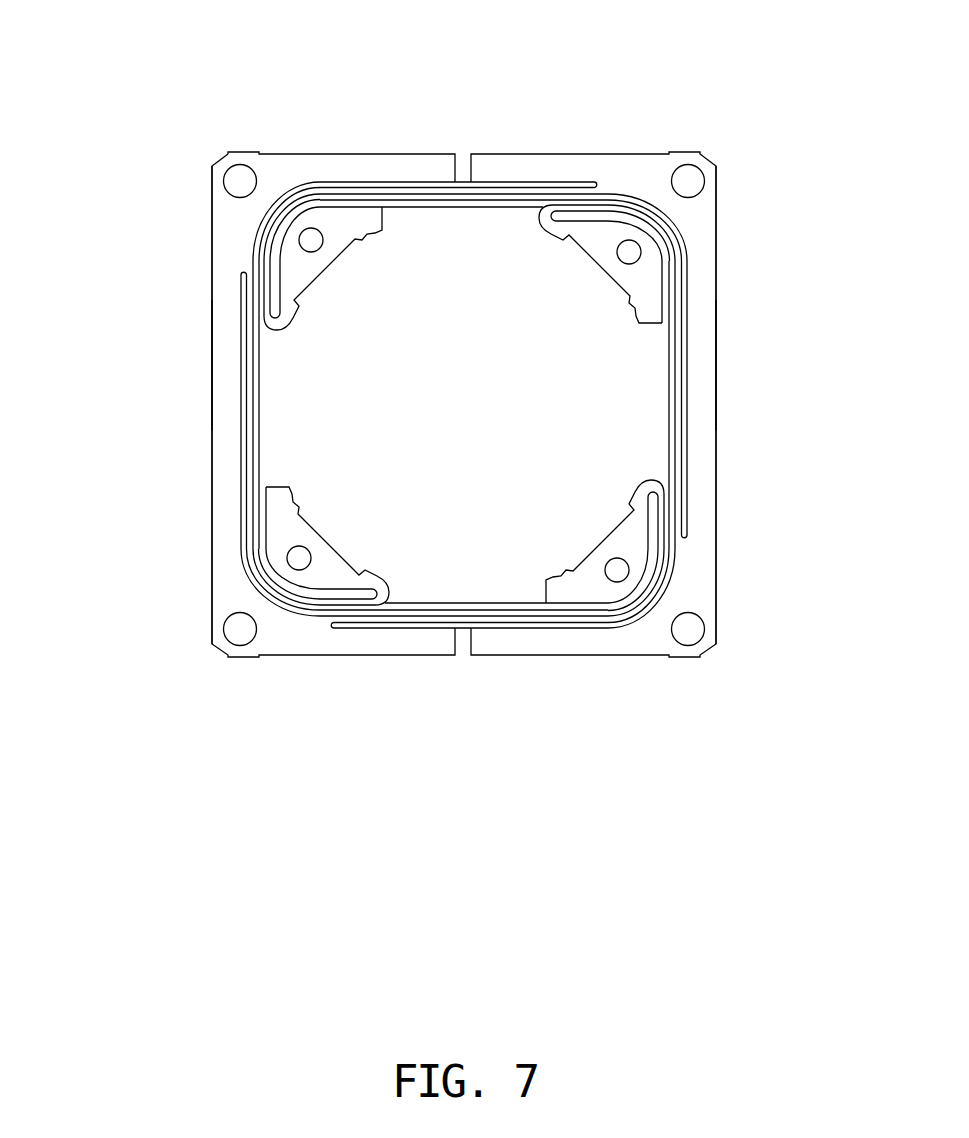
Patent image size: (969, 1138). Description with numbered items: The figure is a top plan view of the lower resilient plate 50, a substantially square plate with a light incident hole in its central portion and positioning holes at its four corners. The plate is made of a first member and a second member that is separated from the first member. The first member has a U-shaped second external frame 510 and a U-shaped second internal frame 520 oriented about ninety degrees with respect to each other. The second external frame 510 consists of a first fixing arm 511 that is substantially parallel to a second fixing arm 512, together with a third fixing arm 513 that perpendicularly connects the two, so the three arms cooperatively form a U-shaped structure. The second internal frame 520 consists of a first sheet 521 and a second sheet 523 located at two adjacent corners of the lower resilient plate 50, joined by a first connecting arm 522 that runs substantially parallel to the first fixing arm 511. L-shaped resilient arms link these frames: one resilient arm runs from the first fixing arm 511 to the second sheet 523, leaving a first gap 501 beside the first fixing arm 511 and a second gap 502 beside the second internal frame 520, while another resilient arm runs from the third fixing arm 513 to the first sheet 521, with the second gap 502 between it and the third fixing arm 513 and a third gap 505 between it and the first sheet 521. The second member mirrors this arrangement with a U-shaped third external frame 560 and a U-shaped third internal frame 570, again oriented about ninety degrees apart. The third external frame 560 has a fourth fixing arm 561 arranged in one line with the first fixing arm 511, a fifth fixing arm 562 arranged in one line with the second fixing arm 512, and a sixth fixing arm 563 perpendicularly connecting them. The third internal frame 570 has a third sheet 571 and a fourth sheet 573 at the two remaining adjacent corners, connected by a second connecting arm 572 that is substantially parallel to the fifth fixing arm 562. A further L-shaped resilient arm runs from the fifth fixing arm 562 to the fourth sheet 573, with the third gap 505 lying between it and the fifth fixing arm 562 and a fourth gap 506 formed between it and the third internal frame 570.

The lower resilient plate 50 is at (193, 66).
The first gap 501 is at (323, 185).
The second gap 502 is at (685, 333).
The third gap 505 is at (618, 620).
The fourth gap 506 is at (290, 607).
The second external frame 510 is at (818, 280).
The first fixing arm 511 is at (622, 153).
The second fixing arm 512 is at (642, 656).
The third fixing arm 513 is at (718, 367).
The second internal frame 520 is at (610, 76).
The first sheet 521 is at (612, 235).
The first connecting arm 522 is at (510, 205).
The second sheet 523 is at (345, 215).
The third external frame 560 is at (110, 280).
The fourth fixing arm 561 is at (330, 153).
The fifth fixing arm 562 is at (286, 656).
The sixth fixing arm 563 is at (210, 367).
The third internal frame 570 is at (546, 734).
The third sheet 571 is at (337, 580).
The second connecting arm 572 is at (445, 605).
The fourth sheet 573 is at (562, 593).